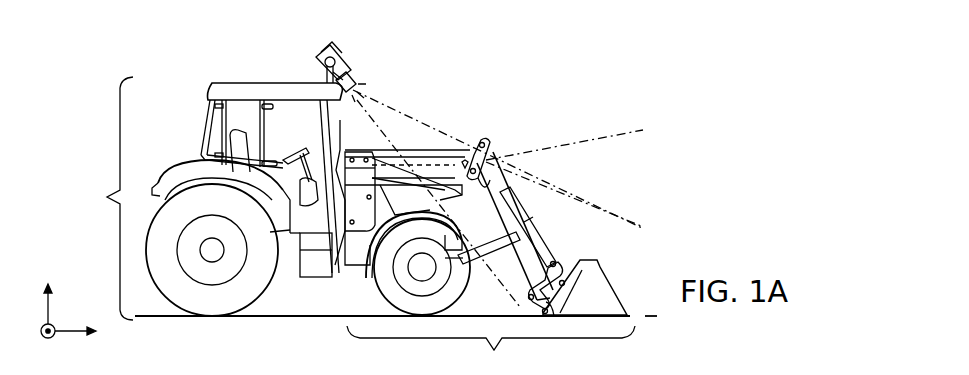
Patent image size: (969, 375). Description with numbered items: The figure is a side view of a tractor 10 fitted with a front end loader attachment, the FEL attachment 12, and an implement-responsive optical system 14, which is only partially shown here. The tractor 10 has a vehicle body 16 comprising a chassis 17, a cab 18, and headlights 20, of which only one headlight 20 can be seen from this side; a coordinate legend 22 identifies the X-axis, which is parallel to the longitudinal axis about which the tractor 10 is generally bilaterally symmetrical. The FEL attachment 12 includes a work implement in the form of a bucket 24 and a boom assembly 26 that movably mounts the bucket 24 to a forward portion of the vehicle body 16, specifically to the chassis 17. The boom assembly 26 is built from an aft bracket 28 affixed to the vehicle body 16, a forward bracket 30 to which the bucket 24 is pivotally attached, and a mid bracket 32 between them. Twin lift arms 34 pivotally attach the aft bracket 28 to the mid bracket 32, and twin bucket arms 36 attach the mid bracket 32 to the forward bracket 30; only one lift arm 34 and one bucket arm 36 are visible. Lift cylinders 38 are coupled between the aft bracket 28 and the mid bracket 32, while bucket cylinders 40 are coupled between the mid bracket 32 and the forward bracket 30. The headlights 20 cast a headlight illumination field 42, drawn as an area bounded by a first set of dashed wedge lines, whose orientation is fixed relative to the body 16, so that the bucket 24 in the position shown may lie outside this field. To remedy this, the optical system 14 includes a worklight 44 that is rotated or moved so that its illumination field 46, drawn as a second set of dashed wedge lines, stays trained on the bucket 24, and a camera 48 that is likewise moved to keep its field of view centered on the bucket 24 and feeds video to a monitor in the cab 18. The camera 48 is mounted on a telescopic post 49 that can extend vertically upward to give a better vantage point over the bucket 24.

The tractor 10 is at (205, 53).
The FEL attachment 12 is at (491, 350).
The implement-responsive optical system 14 is at (344, 51).
The vehicle body 16 is at (106, 198).
The chassis 17 is at (287, 255).
The cab 18 is at (247, 83).
The headlight 20 is at (458, 147).
The coordinate legend 22 is at (53, 322).
The bucket 24 is at (614, 292).
The boom assembly 26 is at (490, 144).
The aft bracket 28 is at (359, 191).
The forward bracket 30 is at (575, 258).
The mid bracket 32 is at (448, 200).
The lift arm 34 is at (375, 167).
The bucket arm 36 is at (480, 264).
The lift cylinder 38 is at (372, 285).
The bucket cylinder 40 is at (544, 243).
The headlight illumination field 42 is at (564, 178).
The worklight 44 is at (357, 81).
The worklight illumination field 46 is at (497, 198).
The camera 48 is at (321, 52).
The telescopic post 49 is at (324, 76).